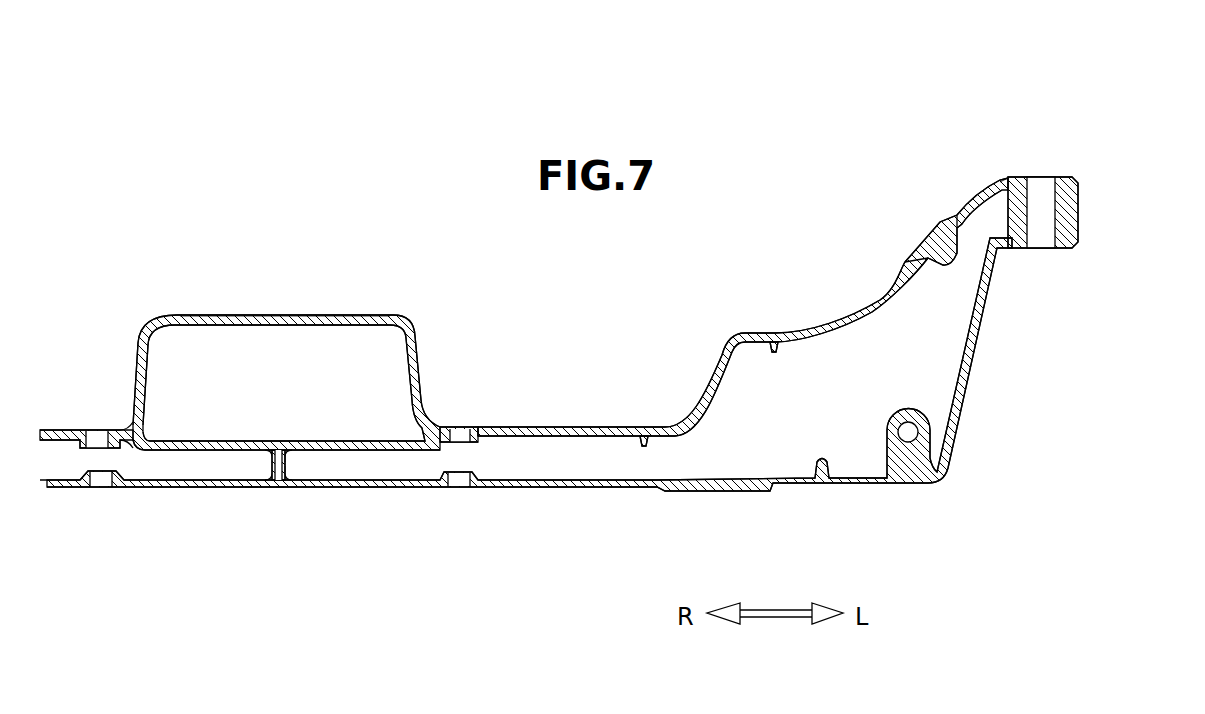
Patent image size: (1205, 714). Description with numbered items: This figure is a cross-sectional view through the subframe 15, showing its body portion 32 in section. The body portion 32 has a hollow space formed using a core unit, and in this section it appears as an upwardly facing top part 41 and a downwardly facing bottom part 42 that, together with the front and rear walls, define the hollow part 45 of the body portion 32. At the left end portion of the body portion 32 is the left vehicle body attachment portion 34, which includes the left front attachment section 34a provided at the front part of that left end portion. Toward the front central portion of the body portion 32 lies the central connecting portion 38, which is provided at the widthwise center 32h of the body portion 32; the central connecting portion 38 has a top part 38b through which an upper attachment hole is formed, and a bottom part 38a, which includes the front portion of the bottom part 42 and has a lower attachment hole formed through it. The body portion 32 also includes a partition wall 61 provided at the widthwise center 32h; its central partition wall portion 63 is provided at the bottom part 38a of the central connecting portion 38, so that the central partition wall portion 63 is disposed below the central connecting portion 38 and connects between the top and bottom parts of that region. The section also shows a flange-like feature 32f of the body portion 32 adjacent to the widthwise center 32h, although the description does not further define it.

The subframe 15 is at (904, 142).
The body portion 32 is at (524, 313).
The flange portion 32f is at (278, 488).
The widthwise center 32h is at (252, 488).
The left vehicle body attachment portion 34 is at (1104, 192).
The left front attachment section 34a is at (1072, 213).
The central connecting portion 38 is at (286, 313).
The bottom part of the central connecting portion 38a is at (283, 449).
The top part of the central connecting portion 38b is at (333, 314).
The top part 41 is at (577, 425).
The bottom part 42 is at (592, 490).
The hollow part 45 is at (804, 424).
The partition wall 61 is at (287, 461).
The central partition wall portion 63 is at (288, 468).